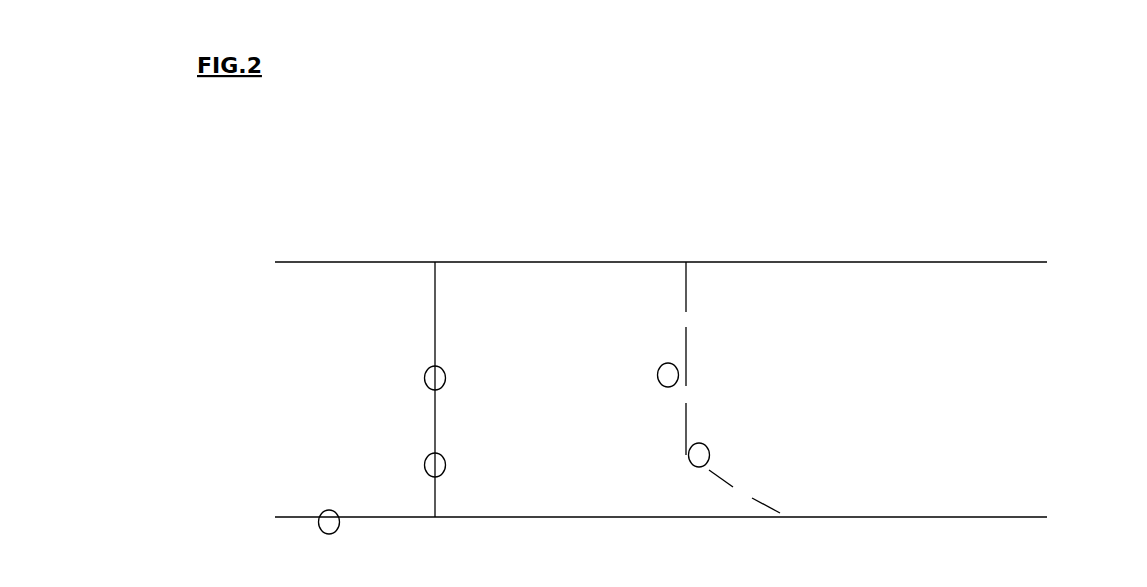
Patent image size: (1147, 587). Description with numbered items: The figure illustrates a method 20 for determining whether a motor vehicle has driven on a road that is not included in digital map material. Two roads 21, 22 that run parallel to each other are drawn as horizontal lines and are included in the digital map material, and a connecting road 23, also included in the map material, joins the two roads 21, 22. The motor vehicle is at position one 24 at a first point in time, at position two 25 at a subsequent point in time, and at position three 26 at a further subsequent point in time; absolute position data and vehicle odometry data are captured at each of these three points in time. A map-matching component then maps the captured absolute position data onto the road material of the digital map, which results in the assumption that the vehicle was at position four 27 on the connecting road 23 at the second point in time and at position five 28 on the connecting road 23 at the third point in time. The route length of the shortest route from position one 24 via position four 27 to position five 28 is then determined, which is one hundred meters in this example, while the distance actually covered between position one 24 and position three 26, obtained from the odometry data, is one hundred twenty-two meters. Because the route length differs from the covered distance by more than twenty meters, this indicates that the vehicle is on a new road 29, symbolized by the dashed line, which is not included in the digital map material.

The method 20 is at (1048, 112).
The road 21 is at (1022, 508).
The road 22 is at (1021, 253).
The connecting road 23 is at (437, 345).
The position one 24 is at (323, 507).
The position two 25 is at (712, 453).
The position three 26 is at (683, 375).
The position four 27 is at (447, 462).
The position five 28 is at (446, 374).
The new road 29 is at (690, 315).